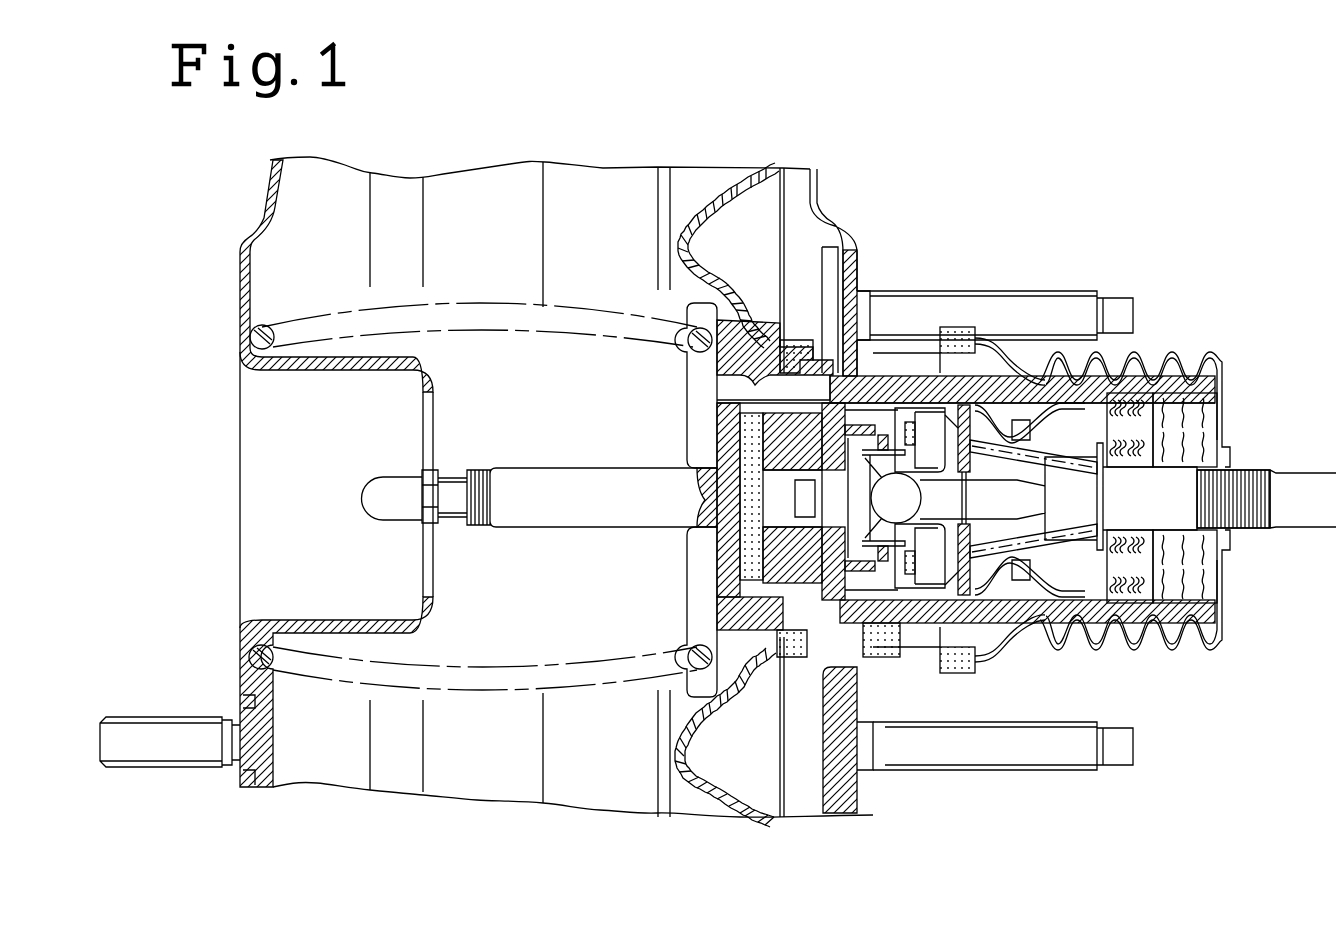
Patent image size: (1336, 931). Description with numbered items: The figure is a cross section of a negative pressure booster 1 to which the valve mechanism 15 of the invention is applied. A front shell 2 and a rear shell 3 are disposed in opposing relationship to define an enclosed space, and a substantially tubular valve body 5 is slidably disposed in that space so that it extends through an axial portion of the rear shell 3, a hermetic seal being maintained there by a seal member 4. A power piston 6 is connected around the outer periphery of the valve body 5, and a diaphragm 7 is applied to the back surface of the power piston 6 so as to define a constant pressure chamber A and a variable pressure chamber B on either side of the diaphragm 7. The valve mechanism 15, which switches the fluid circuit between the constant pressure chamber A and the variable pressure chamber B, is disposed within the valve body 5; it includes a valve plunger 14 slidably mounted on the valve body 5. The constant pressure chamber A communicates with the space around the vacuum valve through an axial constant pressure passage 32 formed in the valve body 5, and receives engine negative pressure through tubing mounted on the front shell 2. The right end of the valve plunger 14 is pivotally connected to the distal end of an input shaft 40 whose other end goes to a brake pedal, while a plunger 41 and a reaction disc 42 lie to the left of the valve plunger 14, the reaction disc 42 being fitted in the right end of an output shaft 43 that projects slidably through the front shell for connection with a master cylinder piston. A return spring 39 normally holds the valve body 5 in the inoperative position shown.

The negative pressure booster 1 is at (996, 147).
The front shell 2 is at (267, 190).
The rear shell 3 is at (823, 187).
The seal member 4 is at (920, 650).
The valve body 5 is at (737, 617).
The power piston 6 is at (717, 195).
The diaphragm 7 is at (742, 203).
The valve plunger 14 is at (873, 627).
The valve mechanism 15 is at (977, 524).
The constant pressure passage 32 is at (735, 386).
The return spring 39 is at (528, 660).
The input shaft 40 is at (1300, 465).
The plunger 41 is at (770, 530).
The reaction disc 42 is at (748, 436).
The output shaft 43 is at (372, 498).
The constant pressure chamber A is at (475, 190).
The variable pressure chamber B is at (795, 190).